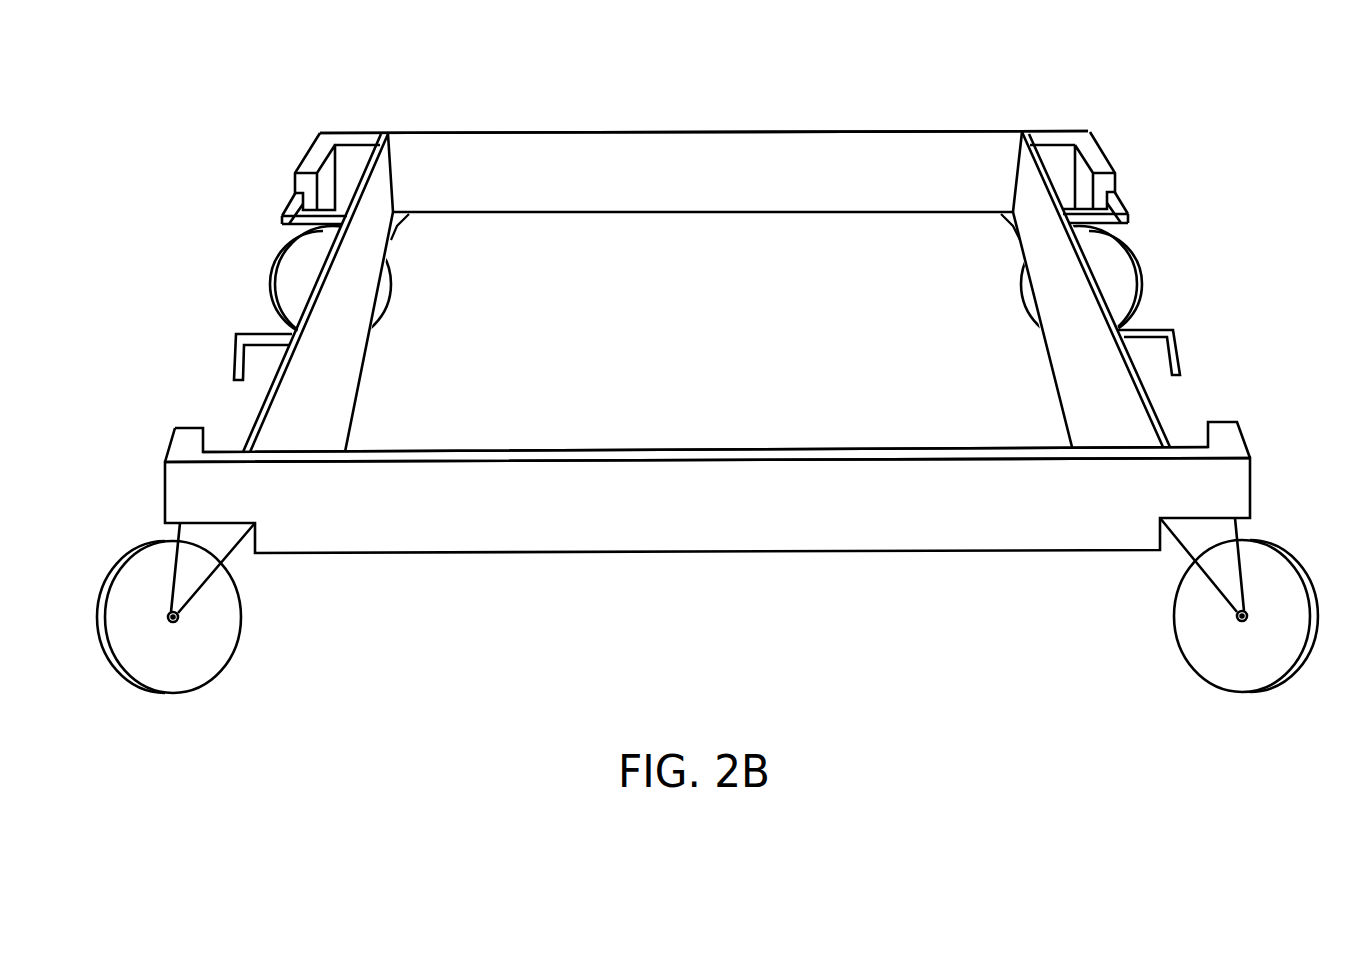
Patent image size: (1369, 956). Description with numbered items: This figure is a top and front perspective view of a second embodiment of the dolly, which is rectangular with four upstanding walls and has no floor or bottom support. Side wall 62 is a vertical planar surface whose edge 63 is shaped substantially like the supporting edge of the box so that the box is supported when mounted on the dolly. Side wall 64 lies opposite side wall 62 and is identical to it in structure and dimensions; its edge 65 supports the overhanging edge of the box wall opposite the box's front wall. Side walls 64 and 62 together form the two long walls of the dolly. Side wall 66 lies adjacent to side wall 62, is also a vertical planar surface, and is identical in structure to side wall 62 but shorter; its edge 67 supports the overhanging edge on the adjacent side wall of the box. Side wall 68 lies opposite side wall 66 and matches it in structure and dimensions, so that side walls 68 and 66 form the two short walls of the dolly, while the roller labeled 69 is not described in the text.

The side wall 62 is at (572, 517).
The edge 63 is at (805, 455).
The side wall 64 is at (552, 163).
The edge 65 is at (782, 133).
The side wall 66 is at (1090, 408).
The edge 67 is at (1088, 268).
The side wall 68 is at (327, 373).
The left roller 69 is at (320, 272).